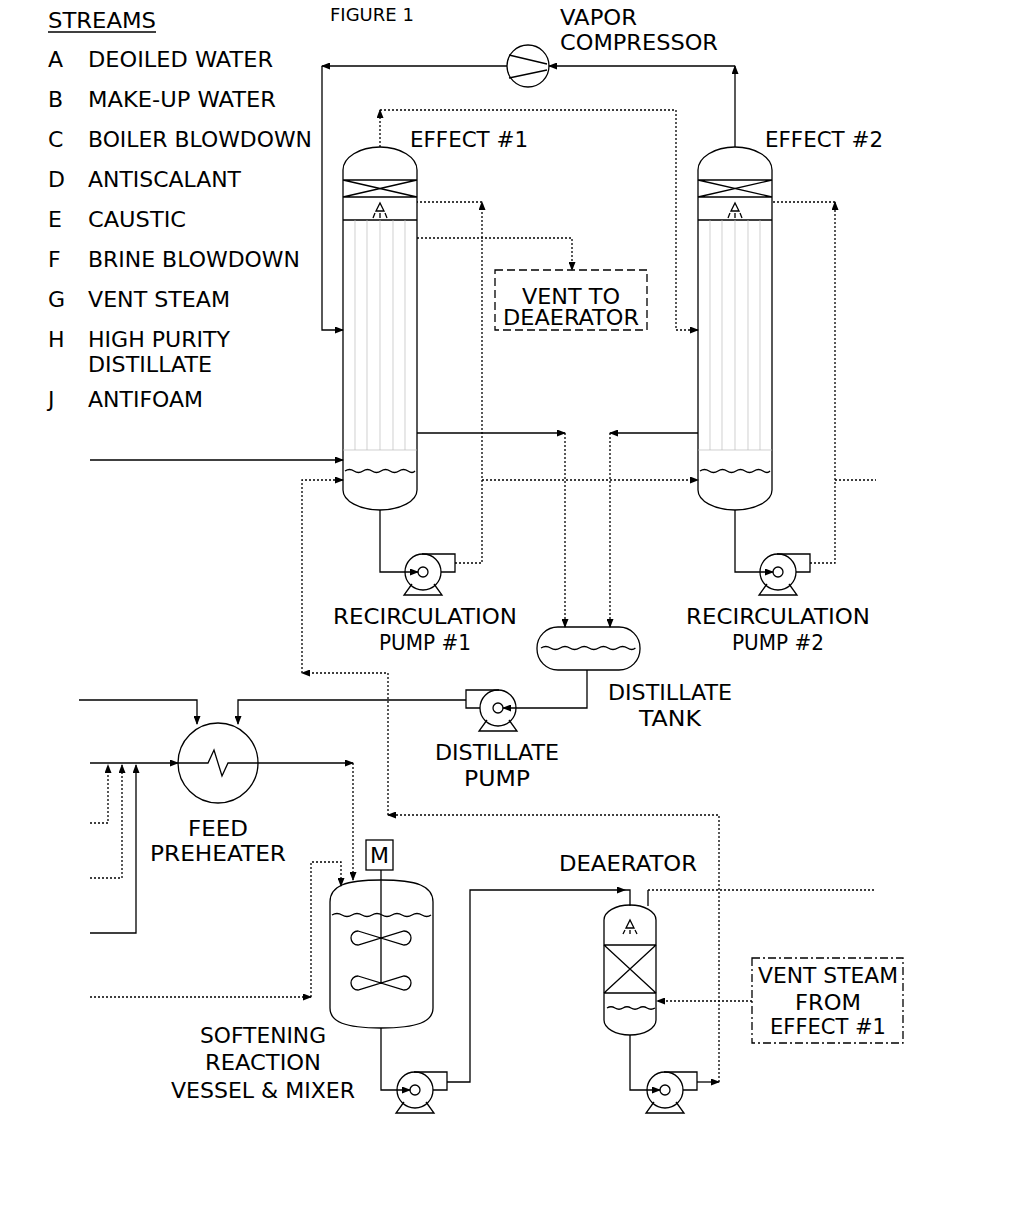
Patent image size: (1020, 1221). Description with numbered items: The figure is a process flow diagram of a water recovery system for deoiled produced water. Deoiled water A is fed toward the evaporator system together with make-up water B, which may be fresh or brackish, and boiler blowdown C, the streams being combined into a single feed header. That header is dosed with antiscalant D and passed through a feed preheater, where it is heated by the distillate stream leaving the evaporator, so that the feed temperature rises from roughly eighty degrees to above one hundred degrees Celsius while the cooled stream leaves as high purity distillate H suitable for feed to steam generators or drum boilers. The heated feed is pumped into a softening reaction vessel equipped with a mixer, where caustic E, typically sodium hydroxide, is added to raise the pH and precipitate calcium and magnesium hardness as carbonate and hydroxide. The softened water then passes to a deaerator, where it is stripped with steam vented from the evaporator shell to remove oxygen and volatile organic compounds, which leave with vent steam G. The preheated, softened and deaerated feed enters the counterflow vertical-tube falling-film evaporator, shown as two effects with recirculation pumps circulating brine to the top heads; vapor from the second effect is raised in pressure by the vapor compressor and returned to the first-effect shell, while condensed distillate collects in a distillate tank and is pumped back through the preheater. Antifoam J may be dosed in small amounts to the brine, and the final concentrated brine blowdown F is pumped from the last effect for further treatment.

The deoiled water A is at (115, 763).
The make-up water B is at (80, 800).
The boiler blowdown C is at (87, 828).
The antiscalant D is at (94, 855).
The caustic E is at (196, 936).
The brine blowdown F is at (874, 480).
The vent steam G is at (780, 890).
The high purity distillate H is at (119, 705).
The antifoam J is at (197, 460).